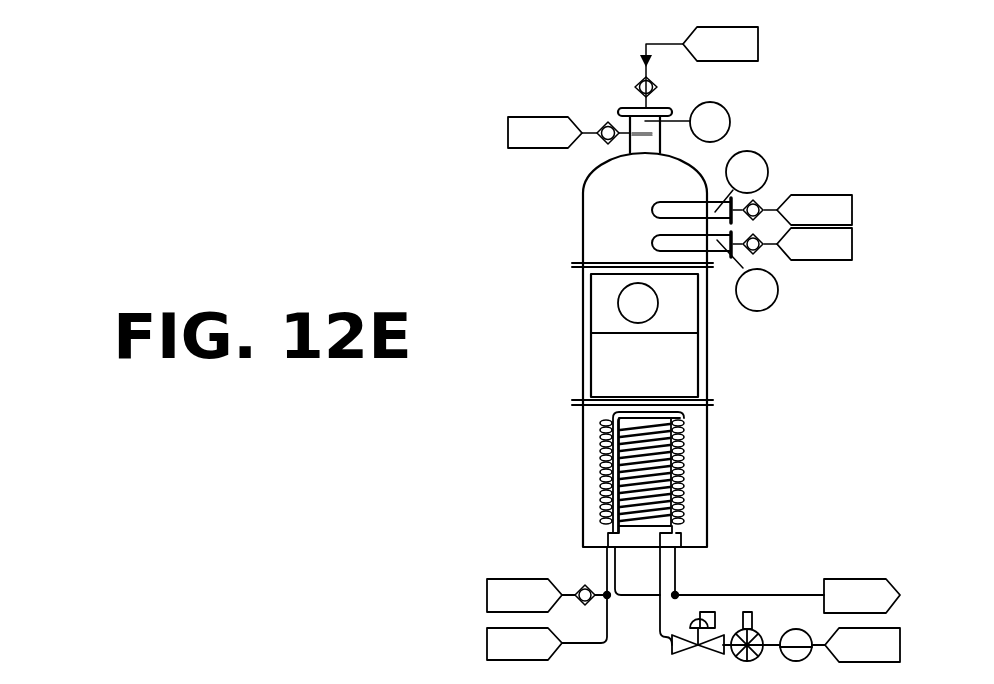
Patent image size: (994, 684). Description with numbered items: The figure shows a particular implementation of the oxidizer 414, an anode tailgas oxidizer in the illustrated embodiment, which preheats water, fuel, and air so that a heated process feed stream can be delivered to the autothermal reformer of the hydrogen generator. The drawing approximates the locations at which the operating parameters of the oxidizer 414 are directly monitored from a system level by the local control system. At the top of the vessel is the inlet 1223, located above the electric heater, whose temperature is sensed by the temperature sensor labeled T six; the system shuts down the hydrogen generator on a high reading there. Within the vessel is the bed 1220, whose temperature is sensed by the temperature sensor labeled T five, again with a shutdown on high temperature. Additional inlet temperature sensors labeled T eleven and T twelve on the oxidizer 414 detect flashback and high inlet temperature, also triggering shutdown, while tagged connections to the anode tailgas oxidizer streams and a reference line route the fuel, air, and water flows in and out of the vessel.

The oxidizer 414 is at (452, 82).
The inlet 1223 is at (637, 108).
The bed 1220 is at (607, 288).